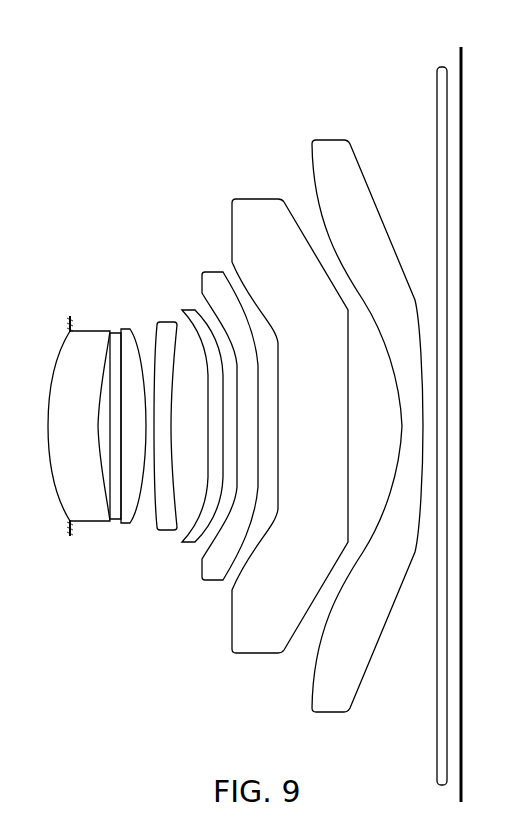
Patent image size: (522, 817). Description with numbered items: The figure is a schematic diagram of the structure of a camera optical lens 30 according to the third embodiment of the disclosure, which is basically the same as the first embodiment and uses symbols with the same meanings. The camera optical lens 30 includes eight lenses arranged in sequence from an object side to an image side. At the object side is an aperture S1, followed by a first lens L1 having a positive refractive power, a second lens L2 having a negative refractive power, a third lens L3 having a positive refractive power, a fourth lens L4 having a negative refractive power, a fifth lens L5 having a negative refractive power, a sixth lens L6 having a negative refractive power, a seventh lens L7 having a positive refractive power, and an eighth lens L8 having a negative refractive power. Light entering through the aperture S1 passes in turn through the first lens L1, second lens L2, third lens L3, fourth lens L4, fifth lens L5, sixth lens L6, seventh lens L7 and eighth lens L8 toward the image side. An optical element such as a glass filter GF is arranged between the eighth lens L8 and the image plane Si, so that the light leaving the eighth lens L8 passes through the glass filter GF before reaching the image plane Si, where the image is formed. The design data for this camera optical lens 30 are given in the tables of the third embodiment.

The camera optical lens 30 is at (231, 364).
The aperture S1 is at (56, 432).
The first lens L1 is at (79, 441).
The second lens L2 is at (115, 412).
The third lens L3 is at (135, 414).
The fourth lens L4 is at (167, 416).
The fifth lens L5 is at (200, 413).
The sixth lens L6 is at (229, 415).
The seventh lens L7 is at (290, 413).
The eighth lens L8 is at (367, 413).
The glass filter GF is at (441, 413).
The image plane Si is at (460, 415).